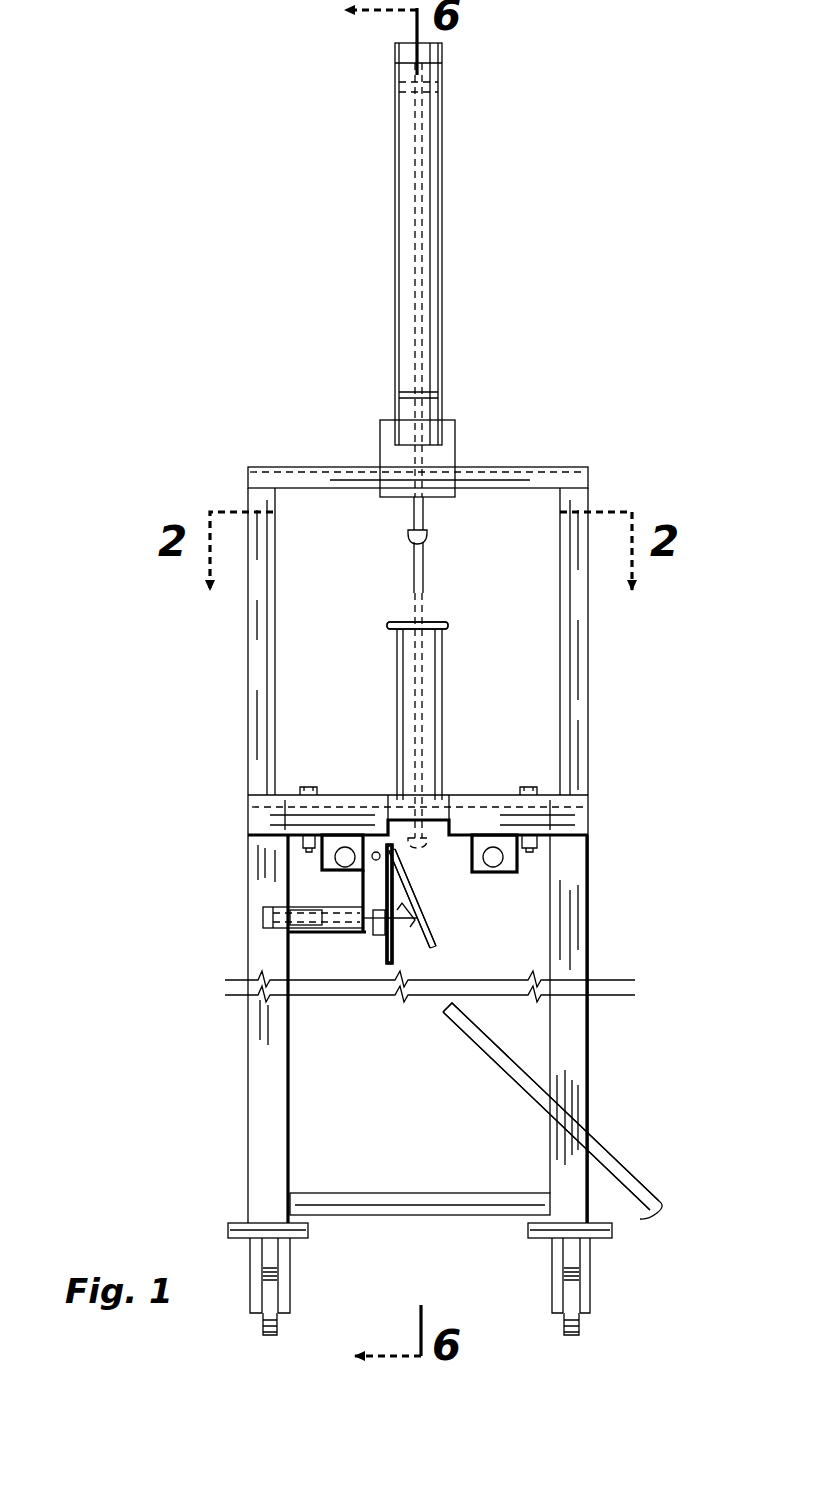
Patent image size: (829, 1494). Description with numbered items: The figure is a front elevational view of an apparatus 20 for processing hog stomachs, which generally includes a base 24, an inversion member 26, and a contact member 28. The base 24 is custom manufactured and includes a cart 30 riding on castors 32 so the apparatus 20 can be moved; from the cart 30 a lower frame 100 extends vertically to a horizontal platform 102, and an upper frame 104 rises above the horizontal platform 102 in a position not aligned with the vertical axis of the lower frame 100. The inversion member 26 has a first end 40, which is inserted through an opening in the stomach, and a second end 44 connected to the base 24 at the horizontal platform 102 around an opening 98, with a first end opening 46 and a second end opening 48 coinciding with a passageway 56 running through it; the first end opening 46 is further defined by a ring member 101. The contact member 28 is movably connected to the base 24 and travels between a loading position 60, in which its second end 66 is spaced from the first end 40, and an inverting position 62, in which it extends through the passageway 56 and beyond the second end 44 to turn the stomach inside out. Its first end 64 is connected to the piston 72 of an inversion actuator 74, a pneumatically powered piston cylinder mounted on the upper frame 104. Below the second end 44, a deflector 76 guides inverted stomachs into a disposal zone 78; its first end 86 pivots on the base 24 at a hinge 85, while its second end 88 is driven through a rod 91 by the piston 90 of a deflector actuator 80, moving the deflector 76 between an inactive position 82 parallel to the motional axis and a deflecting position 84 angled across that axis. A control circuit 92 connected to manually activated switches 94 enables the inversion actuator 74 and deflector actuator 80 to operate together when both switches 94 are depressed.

The apparatus 20 is at (544, 262).
The base 24 is at (616, 457).
The inversion member 26 is at (452, 657).
The contact member 28 is at (405, 275).
The cart 30 is at (450, 1193).
The castors 32 is at (288, 1270).
The first end 40 is at (432, 620).
The second end 44 is at (432, 785).
The first end opening 46 is at (401, 607).
The second end opening 48 is at (430, 785).
The passageway 56 is at (428, 676).
The loading position 60 is at (430, 516).
The inverting position 62 is at (418, 703).
The first end 64 is at (412, 145).
The second end 66 is at (408, 535).
The piston 72 is at (445, 82).
The inversion actuator 74 is at (460, 242).
The deflector 76 is at (342, 1022).
The disposal zone 78 is at (627, 1183).
The deflector actuator 80 is at (262, 915).
The inactive position 82 is at (389, 904).
The deflecting position 84 is at (412, 898).
The hinge 85 is at (362, 893).
The first end 86 is at (382, 852).
The second end 88 is at (423, 915).
The piston 90 is at (278, 933).
The rod 91 is at (348, 935).
The control circuit 92 is at (362, 885).
The switches 94 is at (340, 858).
The opening 98 is at (440, 834).
The lower frame 100 is at (575, 1058).
The ring member 101 is at (417, 625).
The horizontal platform 102 is at (372, 795).
The upper frame 104 is at (267, 707).